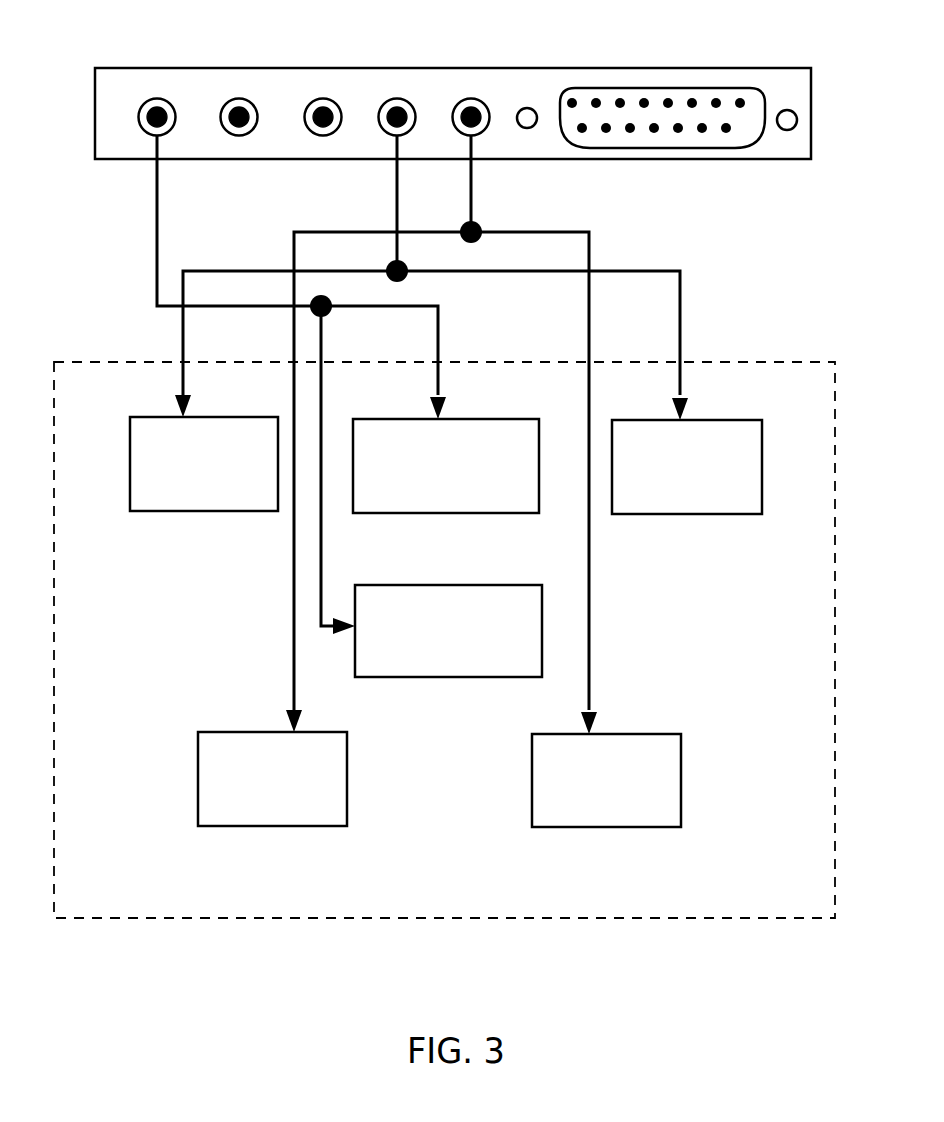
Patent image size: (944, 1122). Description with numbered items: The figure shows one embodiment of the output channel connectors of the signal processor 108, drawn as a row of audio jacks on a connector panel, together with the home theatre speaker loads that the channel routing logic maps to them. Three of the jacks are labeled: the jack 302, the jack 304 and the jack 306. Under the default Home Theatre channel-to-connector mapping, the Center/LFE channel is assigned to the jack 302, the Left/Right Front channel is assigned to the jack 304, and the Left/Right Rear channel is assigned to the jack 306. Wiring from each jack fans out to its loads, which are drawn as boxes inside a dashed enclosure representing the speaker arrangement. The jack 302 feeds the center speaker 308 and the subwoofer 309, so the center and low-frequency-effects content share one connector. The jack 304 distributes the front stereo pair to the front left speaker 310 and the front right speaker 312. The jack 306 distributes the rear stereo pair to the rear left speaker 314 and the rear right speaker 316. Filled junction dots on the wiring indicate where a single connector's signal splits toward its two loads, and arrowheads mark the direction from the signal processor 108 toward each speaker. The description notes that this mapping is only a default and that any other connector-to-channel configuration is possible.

The signal processor 108 is at (796, 68).
The jack 302 is at (170, 103).
The jack 304 is at (412, 103).
The jack 306 is at (487, 103).
The center speaker 308 is at (492, 419).
The subwoofer 309 is at (496, 585).
The front left speaker 310 is at (237, 417).
The front right speaker 312 is at (716, 420).
The rear left speaker 314 is at (221, 732).
The rear right speaker 316 is at (639, 734).